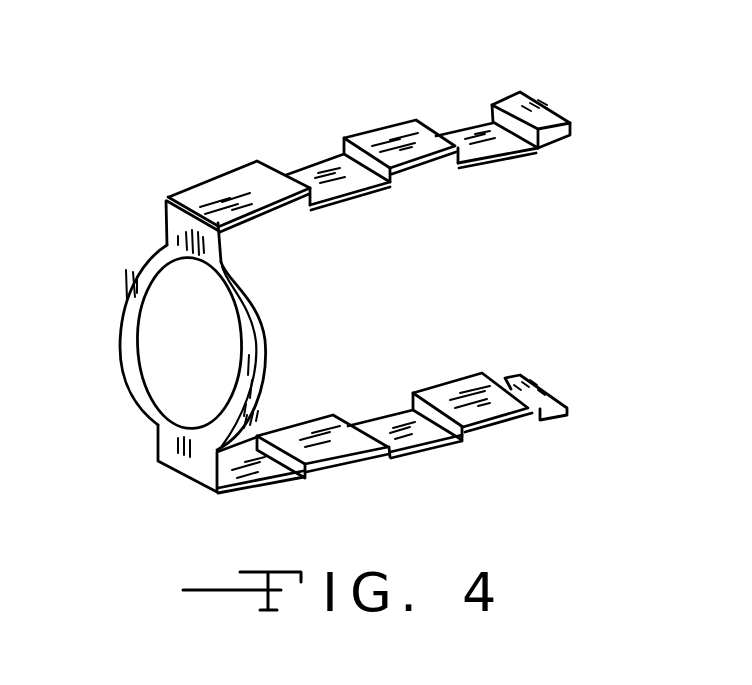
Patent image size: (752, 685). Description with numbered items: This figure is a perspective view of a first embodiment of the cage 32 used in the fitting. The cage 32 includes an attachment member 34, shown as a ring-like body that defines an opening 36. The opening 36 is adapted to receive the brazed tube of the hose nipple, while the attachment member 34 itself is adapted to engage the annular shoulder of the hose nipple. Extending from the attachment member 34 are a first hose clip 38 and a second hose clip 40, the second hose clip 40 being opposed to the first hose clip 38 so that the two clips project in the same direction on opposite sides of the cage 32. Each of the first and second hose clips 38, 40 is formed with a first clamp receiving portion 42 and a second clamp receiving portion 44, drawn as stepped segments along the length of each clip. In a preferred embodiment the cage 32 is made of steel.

The cage 32 is at (168, 197).
The attachment member 34 is at (263, 333).
The opening 36 is at (163, 360).
The first hose clip 38 is at (228, 182).
The second hose clip 40 is at (243, 492).
The first clamp receiving portion 42 is at (472, 125).
The second clamp receiving portion 44 is at (311, 174).